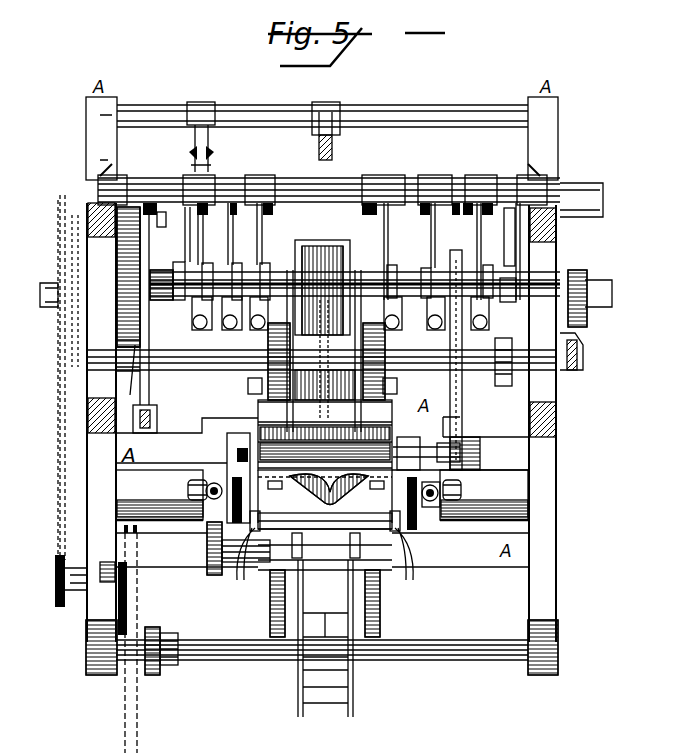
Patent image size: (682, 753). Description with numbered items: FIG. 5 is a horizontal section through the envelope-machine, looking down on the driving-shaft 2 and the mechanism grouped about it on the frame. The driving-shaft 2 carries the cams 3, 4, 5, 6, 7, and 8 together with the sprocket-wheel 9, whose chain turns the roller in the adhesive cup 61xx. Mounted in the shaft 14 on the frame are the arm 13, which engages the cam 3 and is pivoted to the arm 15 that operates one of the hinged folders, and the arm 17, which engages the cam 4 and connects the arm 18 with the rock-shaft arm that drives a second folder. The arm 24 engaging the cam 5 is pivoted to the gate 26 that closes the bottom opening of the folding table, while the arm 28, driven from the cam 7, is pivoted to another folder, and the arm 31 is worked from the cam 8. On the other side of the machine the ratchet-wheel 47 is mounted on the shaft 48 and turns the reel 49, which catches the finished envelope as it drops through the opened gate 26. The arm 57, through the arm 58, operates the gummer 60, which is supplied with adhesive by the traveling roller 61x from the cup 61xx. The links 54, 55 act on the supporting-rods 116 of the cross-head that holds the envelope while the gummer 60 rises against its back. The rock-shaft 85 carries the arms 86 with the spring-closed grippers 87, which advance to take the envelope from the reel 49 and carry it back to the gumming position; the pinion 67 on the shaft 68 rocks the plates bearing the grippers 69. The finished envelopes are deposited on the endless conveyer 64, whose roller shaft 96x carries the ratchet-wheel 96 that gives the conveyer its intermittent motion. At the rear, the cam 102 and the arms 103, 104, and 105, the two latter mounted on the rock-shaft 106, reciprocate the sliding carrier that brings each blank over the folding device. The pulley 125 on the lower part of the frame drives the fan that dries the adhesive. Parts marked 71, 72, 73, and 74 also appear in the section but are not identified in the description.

The rock-shaft 106 is at (322, 109).
The arm 103 is at (194, 167).
The arm 104 is at (211, 147).
The arm 105 is at (330, 138).
The shaft 14 is at (296, 192).
The cam 102 is at (178, 268).
The cam 8 is at (206, 264).
The cam 7 is at (237, 264).
The cam 6 is at (266, 264).
The arm 17 is at (432, 229).
The cam 5 is at (392, 270).
The cam 4 is at (423, 270).
The sprocket-wheel 9 is at (456, 250).
The arm 13 is at (480, 248).
The cam 3 is at (490, 275).
The arm 58 is at (325, 320).
The cup 61xx is at (270, 425).
The arm 57 is at (334, 360).
The arm 31 is at (195, 323).
The arm 28 is at (224, 323).
The gate 26 is at (252, 323).
The arm 24 is at (400, 323).
The arm 18 is at (438, 323).
The arm 15 is at (480, 333).
The driving-shaft 2 is at (40, 296).
The reel 49 is at (321, 359).
The shaft 48 is at (491, 363).
The ratchet-wheel 47 is at (503, 382).
The gear 71 is at (115, 285).
The column 73 is at (150, 345).
The link 72 is at (126, 375).
The block 74 is at (155, 415).
The gummer 60 is at (325, 370).
The grippers 87 is at (378, 483).
The roller 61x is at (345, 513).
The grippers 69 is at (352, 560).
The arms 86 is at (232, 480).
The shaft 68 is at (250, 570).
The endless chain or conveyer 64 is at (340, 710).
The rock-shaft 85 is at (130, 512).
The link 55 is at (188, 482).
The link 54 is at (464, 486).
The supporting-rods 116 is at (440, 508).
The pinion 67 is at (207, 550).
The pulley 125 is at (136, 600).
The ratchet-wheel 96 is at (160, 660).
The shaft 96x is at (228, 660).